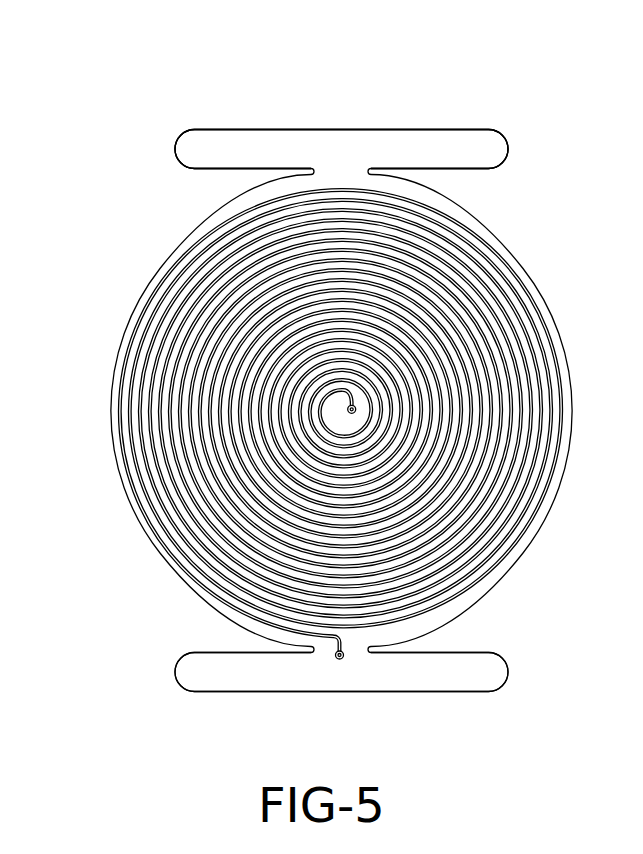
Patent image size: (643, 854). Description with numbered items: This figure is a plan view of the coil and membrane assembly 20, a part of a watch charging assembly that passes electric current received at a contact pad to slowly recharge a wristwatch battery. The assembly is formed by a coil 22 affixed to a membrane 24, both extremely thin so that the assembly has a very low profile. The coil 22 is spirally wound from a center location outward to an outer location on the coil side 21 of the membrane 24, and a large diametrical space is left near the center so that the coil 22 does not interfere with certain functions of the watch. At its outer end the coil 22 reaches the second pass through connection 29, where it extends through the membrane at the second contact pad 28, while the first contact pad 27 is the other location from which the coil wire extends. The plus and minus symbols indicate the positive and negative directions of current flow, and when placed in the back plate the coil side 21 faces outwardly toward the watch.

The coil and membrane assembly 20 is at (303, 386).
The coil side 21 is at (165, 320).
The coil 22 is at (195, 566).
The membrane 24 is at (280, 130).
The first contact pad 27 is at (428, 148).
The second contact pad 28 is at (245, 688).
The second pass through connection 29 is at (346, 660).